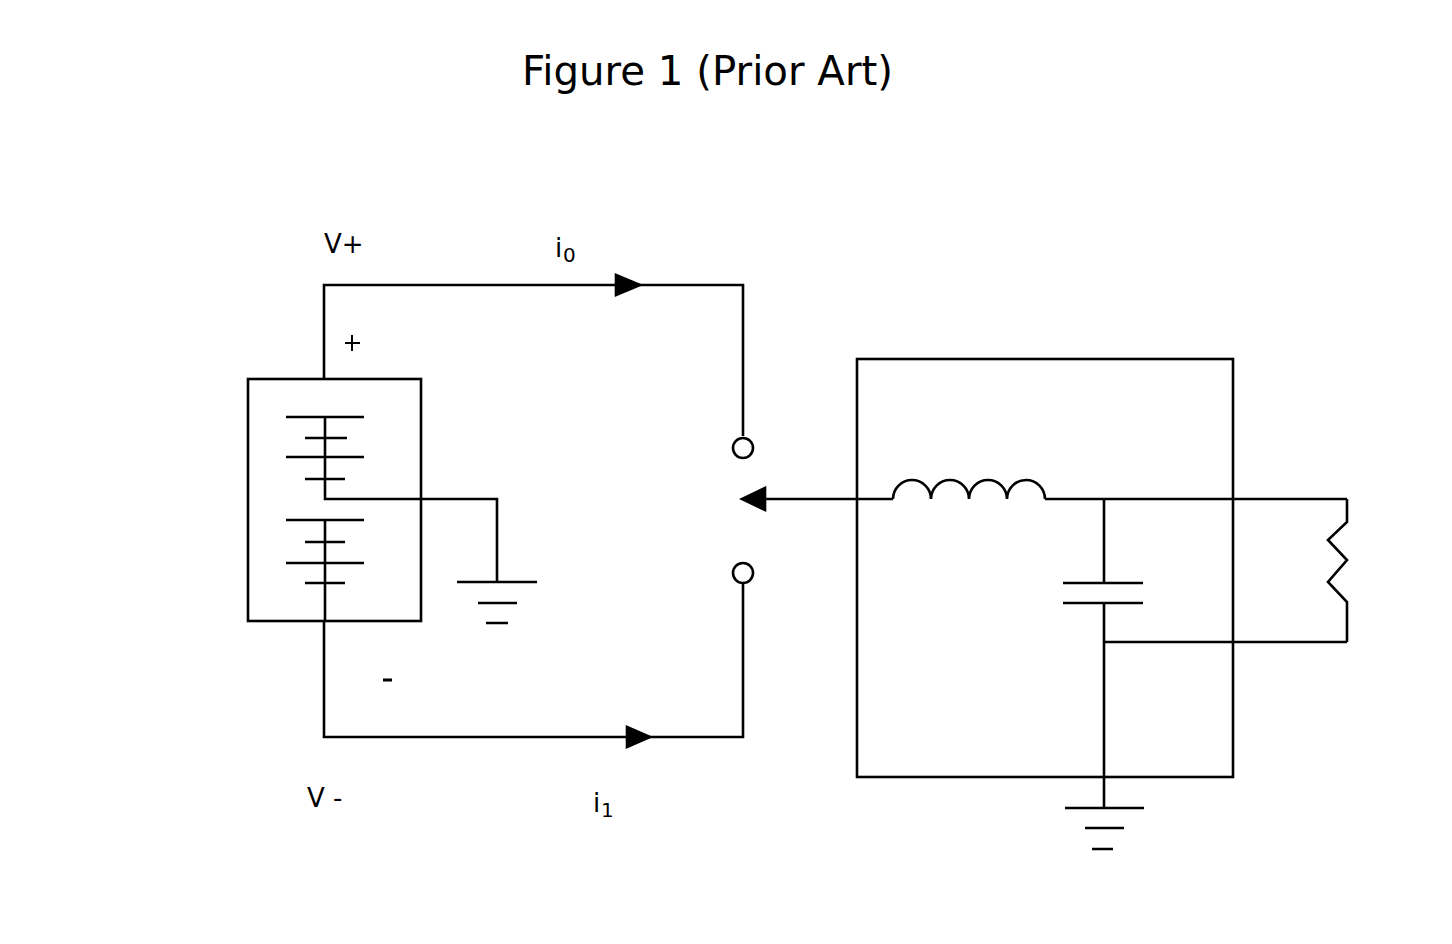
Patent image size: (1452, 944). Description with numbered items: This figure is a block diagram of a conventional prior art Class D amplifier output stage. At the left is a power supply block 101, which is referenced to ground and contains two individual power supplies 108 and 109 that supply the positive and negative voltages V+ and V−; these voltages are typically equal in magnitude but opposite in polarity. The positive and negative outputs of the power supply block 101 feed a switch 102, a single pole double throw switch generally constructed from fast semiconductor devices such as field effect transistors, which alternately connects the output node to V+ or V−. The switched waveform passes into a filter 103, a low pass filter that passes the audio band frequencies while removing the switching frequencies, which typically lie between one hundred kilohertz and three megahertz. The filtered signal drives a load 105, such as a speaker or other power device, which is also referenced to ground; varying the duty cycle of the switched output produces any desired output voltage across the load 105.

The power supply block 101 is at (355, 464).
The switch 102 is at (795, 493).
The filter 103 is at (1102, 604).
The load 105 is at (1389, 568).
The power supply 108 is at (269, 448).
The power supply 109 is at (269, 570).